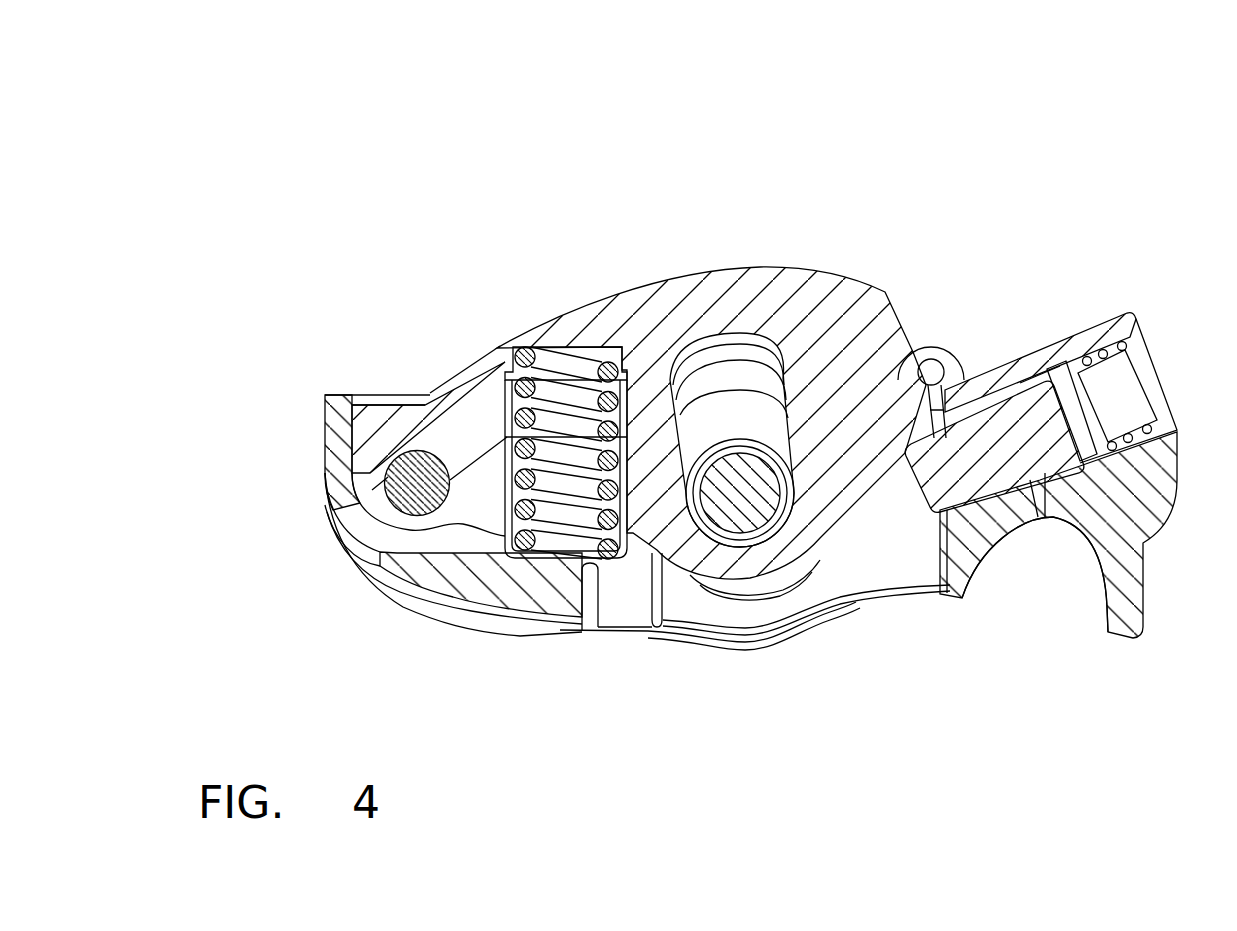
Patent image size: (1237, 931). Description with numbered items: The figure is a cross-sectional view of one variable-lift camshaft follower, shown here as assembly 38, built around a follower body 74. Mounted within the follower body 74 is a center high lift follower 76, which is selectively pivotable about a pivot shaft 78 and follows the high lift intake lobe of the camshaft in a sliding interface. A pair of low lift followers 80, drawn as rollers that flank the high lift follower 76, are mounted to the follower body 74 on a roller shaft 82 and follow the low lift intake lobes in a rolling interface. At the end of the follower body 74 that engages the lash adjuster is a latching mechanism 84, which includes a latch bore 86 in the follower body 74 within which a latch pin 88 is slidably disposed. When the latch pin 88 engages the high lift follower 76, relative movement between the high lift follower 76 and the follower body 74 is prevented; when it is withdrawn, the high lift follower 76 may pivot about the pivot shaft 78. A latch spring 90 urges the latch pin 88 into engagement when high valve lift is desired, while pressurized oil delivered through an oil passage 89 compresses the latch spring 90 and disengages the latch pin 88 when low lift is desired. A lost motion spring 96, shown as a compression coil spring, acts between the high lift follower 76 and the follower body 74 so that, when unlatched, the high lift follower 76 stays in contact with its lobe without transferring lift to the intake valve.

The rocker arm assembly 38 is at (1124, 92).
The follower body 74 is at (323, 443).
The center high lift follower 76 is at (710, 272).
The pivot shaft 78 is at (393, 497).
The low lift follower 80 is at (807, 643).
The roller shaft 82 is at (722, 523).
The latching mechanism 84 is at (1036, 378).
The latch bore 86 is at (1025, 400).
The latch pin 88 is at (1040, 352).
The oil passage 89 is at (1043, 517).
The latch spring 90 is at (1100, 347).
The lost motion spring 96 is at (520, 343).